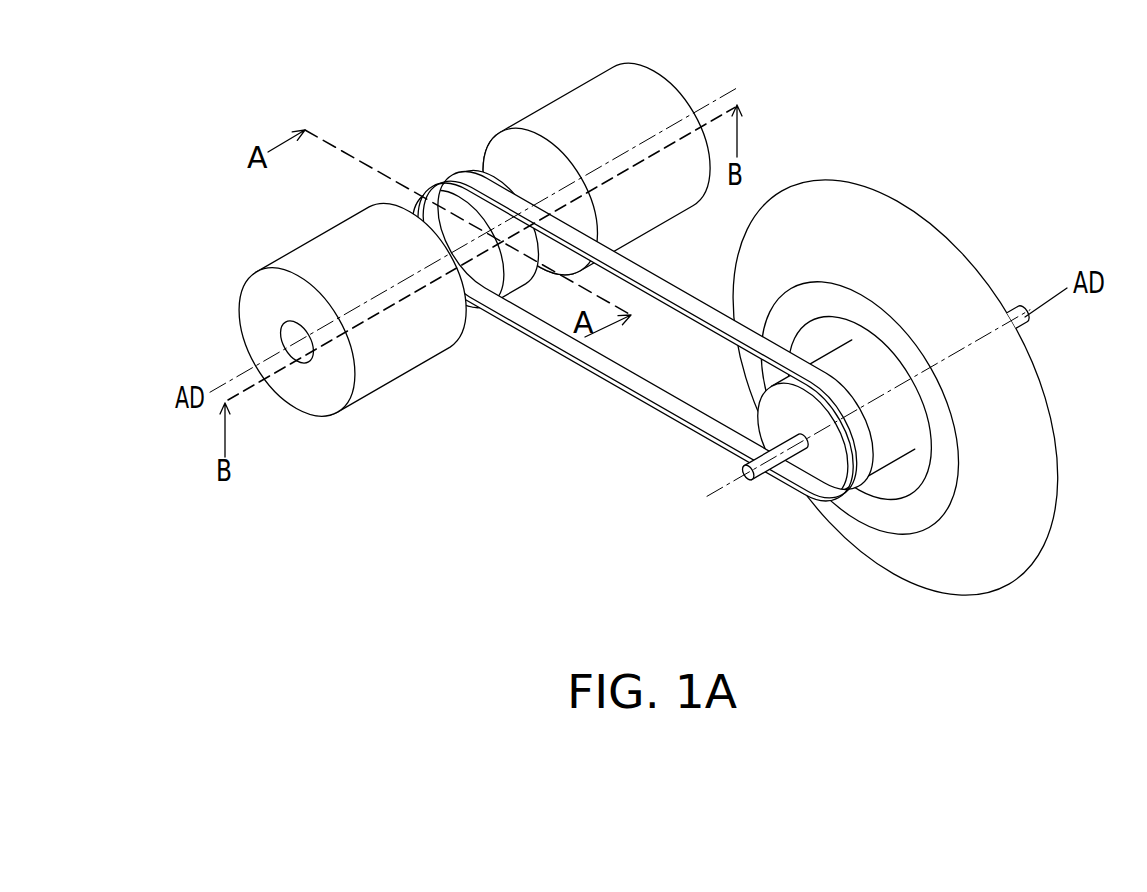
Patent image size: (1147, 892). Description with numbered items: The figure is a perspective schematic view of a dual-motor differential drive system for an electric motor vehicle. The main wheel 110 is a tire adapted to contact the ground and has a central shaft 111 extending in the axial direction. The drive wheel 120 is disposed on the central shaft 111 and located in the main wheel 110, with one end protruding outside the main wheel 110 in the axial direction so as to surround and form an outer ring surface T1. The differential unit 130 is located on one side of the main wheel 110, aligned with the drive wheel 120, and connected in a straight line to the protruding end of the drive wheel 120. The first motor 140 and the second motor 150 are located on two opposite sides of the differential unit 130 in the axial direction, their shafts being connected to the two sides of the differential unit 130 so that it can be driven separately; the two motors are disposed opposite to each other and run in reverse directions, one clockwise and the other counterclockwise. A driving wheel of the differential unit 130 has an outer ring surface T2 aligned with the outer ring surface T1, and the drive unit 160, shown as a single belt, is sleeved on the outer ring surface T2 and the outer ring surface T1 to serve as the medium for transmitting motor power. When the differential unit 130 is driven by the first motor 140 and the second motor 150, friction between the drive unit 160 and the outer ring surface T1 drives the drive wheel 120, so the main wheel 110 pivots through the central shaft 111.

The main wheel 110 is at (1033, 410).
The central shaft 111 is at (766, 479).
The drive wheel 120 is at (900, 421).
The differential unit 130 is at (413, 195).
The first motor 140 is at (308, 253).
The second motor 150 is at (582, 97).
The drive unit 160 is at (633, 380).
The outer ring surface T1 is at (825, 383).
The outer ring surface T2 is at (510, 272).